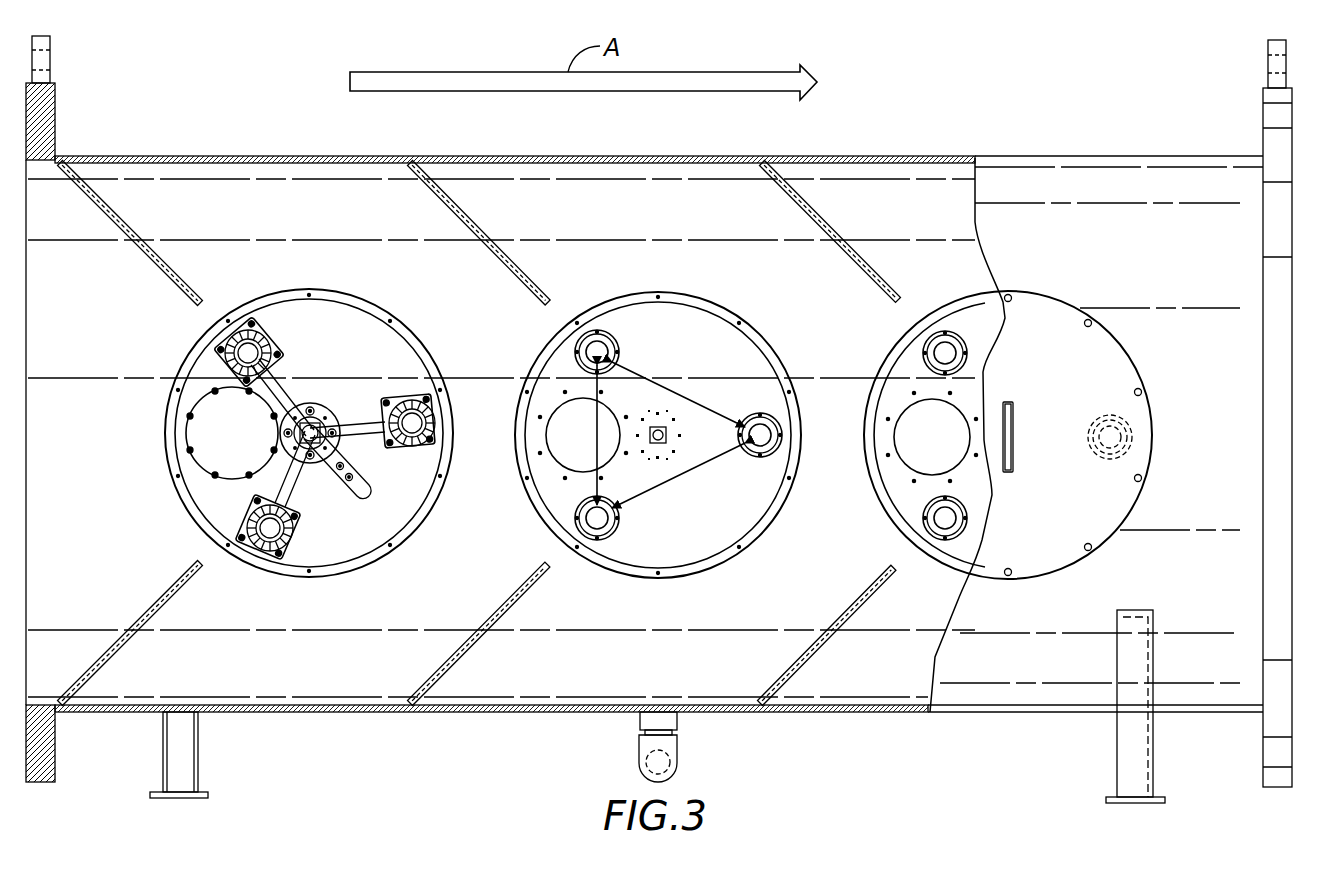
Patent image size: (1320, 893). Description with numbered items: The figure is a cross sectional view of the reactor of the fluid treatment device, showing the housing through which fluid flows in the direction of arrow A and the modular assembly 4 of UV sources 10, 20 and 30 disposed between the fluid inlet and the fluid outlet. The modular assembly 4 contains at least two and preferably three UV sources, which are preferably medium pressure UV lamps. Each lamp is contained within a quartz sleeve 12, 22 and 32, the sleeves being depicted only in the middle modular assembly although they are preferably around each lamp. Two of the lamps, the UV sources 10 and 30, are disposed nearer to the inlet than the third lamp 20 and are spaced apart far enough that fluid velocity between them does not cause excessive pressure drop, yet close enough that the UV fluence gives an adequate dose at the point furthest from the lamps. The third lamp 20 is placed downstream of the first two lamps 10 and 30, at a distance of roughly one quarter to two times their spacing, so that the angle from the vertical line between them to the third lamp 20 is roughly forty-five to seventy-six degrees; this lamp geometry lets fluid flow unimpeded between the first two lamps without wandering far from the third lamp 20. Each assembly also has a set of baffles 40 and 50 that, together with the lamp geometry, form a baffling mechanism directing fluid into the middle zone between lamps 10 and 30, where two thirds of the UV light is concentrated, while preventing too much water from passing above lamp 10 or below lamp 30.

The modular assembly 4 is at (417, 471).
The UV source 10 is at (270, 336).
The quartz sleeve 12 is at (620, 350).
The UV source 20 is at (396, 398).
The quartz sleeve 22 is at (746, 418).
The UV source 30 is at (300, 532).
The quartz sleeve 32 is at (620, 522).
The baffle 40 is at (158, 263).
The baffle 50 is at (158, 598).